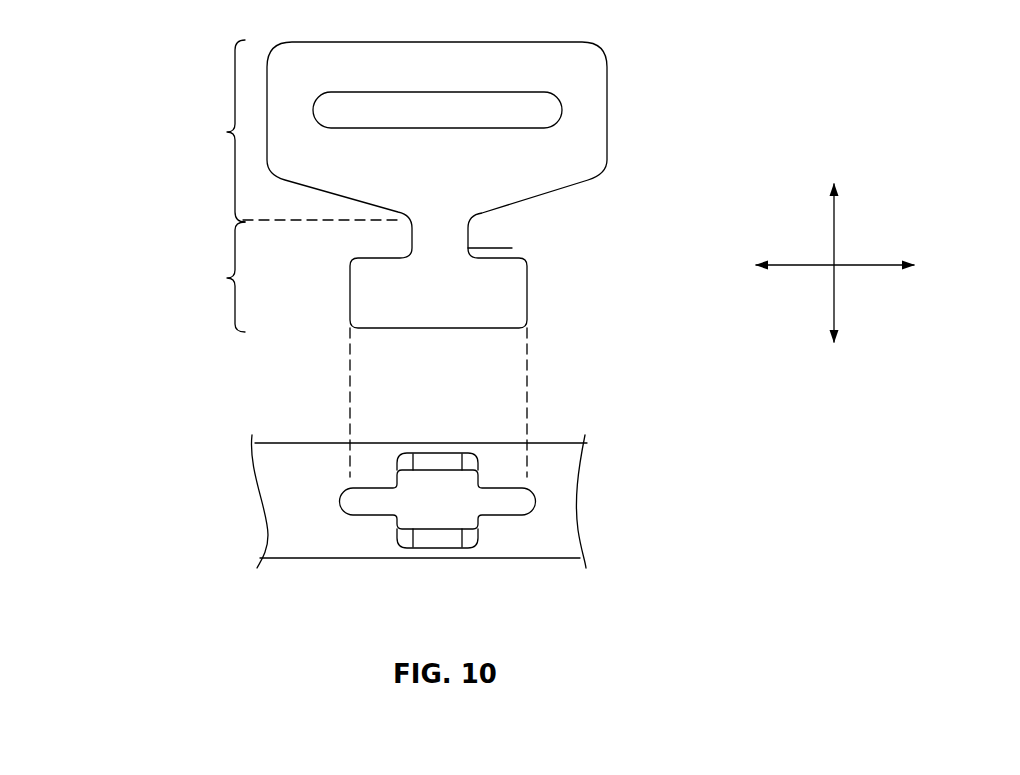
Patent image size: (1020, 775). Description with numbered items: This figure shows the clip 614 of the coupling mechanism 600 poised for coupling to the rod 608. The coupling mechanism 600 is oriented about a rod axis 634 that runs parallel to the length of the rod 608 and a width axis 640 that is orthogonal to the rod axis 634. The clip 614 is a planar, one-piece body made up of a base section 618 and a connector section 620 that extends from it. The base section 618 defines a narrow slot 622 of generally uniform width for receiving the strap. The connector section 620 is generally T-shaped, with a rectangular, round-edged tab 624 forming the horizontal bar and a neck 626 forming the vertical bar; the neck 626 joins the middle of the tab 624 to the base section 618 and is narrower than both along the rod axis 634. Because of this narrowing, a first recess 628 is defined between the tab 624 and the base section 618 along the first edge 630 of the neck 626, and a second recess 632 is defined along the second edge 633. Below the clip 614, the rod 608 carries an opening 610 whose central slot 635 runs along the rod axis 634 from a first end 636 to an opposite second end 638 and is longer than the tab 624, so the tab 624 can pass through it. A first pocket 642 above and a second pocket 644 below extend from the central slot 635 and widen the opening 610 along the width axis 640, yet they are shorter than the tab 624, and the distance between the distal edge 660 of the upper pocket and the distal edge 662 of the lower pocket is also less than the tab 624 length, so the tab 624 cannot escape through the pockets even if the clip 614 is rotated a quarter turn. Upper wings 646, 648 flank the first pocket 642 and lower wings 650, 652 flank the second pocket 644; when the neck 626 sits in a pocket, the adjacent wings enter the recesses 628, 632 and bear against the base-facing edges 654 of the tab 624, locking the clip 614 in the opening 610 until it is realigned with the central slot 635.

The coupling mechanism 600 is at (84, 164).
The rod 608 is at (283, 547).
The opening 610 is at (391, 515).
The clip 614 is at (588, 123).
The base section 618 is at (285, 131).
The connector section 620 is at (210, 277).
The slot 622 is at (373, 105).
The tab 624 is at (485, 293).
The neck 626 is at (440, 233).
The first recess 628 is at (367, 239).
The first edge 630 is at (408, 238).
The second recess 632 is at (514, 244).
The second edge 633 is at (520, 256).
The rod axis 634 is at (807, 262).
The central slot 635 is at (339, 501).
The first end 636 is at (336, 519).
The second end 638 is at (538, 521).
The width axis 640 is at (837, 225).
The first pocket 642 is at (394, 457).
The second pocket 644 is at (441, 537).
The upper wing 646 is at (374, 478).
The upper wing 648 is at (492, 477).
The lower wing 650 is at (373, 523).
The lower wing 652 is at (487, 523).
The base-facing edges 654 is at (378, 257).
The distal edge 660 is at (440, 460).
The distal edge 662 is at (457, 541).